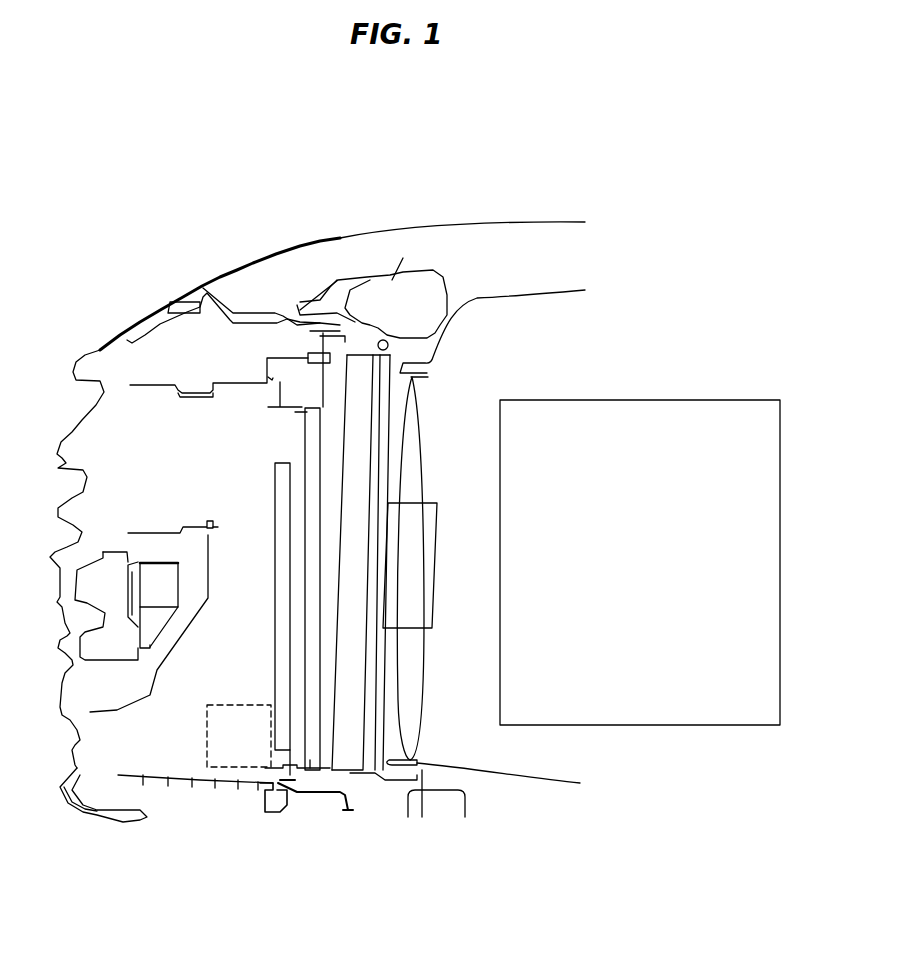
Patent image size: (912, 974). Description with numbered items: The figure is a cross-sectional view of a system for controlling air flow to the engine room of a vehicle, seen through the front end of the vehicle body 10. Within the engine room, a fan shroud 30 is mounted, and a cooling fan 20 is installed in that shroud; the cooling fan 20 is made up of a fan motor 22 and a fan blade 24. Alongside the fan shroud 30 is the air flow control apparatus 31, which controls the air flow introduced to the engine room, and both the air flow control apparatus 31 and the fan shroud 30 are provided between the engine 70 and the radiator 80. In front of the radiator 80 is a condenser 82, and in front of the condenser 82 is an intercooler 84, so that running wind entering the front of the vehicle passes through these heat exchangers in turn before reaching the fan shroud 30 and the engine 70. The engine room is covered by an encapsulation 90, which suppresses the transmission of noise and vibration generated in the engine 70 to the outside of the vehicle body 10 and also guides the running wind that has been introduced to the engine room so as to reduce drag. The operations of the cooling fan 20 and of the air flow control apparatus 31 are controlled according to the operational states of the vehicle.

The vehicle body 10 is at (384, 208).
The cooling fan 20 is at (432, 652).
The fan motor 22 is at (432, 604).
The fan blade 24 is at (418, 787).
The fan shroud 30 is at (385, 798).
The air flow control apparatus 31 is at (350, 800).
The engine 70 is at (717, 726).
The radiator 80 is at (292, 783).
The condenser 82 is at (268, 785).
The intercooler 84 is at (216, 770).
The encapsulation 90 is at (538, 293).